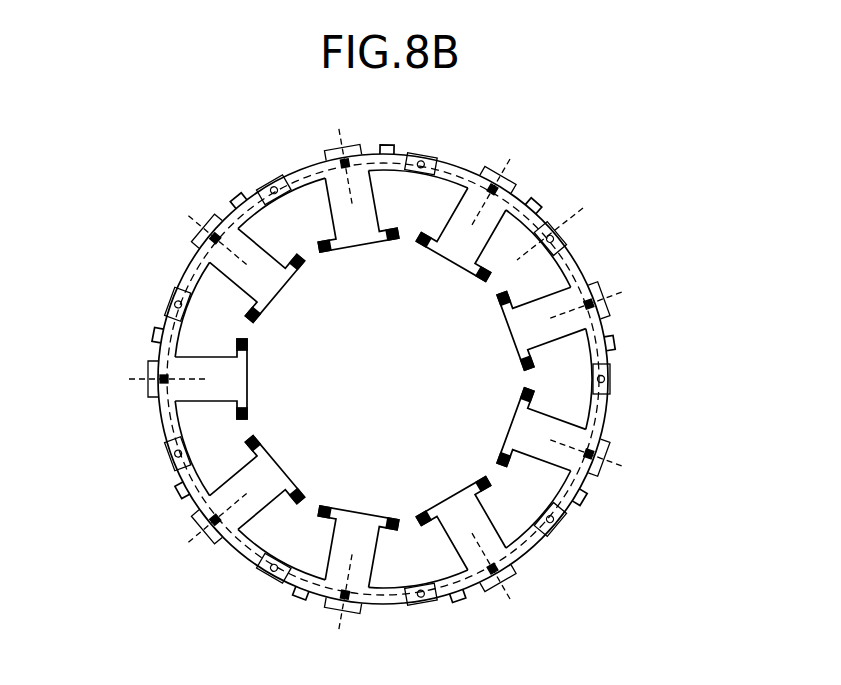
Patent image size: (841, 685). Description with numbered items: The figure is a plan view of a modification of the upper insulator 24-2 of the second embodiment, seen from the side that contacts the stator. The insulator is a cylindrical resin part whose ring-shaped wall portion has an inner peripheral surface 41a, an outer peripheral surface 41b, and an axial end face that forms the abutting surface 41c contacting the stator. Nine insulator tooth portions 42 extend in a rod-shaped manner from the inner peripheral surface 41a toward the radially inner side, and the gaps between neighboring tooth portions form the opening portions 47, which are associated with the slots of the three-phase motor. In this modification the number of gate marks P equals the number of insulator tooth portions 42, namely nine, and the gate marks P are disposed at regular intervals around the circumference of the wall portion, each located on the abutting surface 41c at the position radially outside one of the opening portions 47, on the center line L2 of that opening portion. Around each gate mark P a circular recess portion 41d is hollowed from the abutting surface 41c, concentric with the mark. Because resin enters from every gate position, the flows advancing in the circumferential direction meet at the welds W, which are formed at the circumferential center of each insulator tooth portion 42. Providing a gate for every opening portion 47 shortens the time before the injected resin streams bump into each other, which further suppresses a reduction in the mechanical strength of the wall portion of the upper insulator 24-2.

The upper insulator 24-2 is at (622, 173).
The inner peripheral surface 41a is at (607, 337).
The outer peripheral surface 41b is at (603, 363).
The abutting surface 41c is at (576, 302).
The recess portion 41d is at (437, 167).
The insulator tooth portions 42 is at (345, 217).
The opening portions 47 is at (406, 222).
The center line L2 is at (573, 210).
The gate marks P is at (268, 188).
The welds W is at (207, 227).